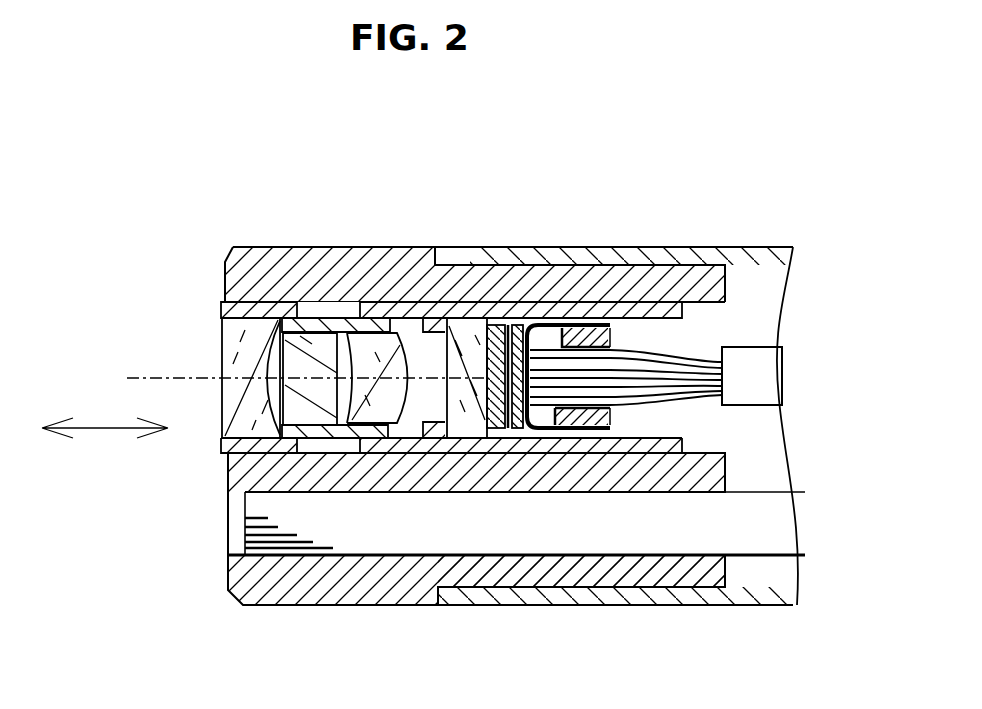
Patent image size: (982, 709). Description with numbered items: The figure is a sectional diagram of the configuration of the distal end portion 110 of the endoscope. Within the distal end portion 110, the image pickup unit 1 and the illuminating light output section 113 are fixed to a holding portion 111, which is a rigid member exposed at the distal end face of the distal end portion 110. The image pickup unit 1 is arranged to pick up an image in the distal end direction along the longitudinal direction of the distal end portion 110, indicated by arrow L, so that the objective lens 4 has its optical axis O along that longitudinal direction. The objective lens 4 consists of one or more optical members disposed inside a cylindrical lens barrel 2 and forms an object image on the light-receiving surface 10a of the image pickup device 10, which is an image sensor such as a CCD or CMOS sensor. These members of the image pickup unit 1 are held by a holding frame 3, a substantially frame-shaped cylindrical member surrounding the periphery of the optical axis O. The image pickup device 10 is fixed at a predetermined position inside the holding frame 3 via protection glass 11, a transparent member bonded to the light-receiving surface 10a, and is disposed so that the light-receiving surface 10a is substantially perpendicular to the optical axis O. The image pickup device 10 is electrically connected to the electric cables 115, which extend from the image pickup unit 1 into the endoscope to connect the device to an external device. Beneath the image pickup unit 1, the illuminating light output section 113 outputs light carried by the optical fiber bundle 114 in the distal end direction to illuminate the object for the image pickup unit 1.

The image pickup unit 1 is at (194, 331).
The lens barrel 2 is at (270, 318).
The holding frame 3 is at (387, 325).
The objective lens 4 is at (358, 333).
The image pickup device 10 is at (548, 280).
The light-receiving surface 10a is at (500, 325).
The protection glass 11 is at (477, 320).
The distal end portion 110 is at (517, 158).
The holding portion 111 is at (247, 252).
The illuminating light output section 113 is at (228, 522).
The optical fiber bundle 114 is at (333, 558).
The electric cables 115 is at (743, 347).
The optical axis O is at (140, 378).
The longitudinal direction L is at (105, 422).